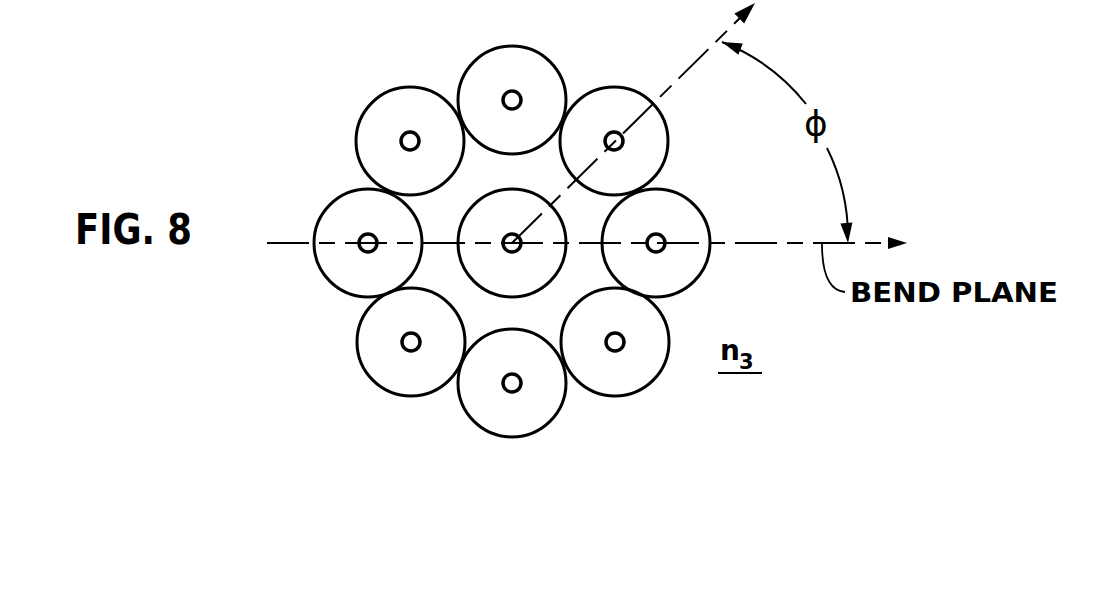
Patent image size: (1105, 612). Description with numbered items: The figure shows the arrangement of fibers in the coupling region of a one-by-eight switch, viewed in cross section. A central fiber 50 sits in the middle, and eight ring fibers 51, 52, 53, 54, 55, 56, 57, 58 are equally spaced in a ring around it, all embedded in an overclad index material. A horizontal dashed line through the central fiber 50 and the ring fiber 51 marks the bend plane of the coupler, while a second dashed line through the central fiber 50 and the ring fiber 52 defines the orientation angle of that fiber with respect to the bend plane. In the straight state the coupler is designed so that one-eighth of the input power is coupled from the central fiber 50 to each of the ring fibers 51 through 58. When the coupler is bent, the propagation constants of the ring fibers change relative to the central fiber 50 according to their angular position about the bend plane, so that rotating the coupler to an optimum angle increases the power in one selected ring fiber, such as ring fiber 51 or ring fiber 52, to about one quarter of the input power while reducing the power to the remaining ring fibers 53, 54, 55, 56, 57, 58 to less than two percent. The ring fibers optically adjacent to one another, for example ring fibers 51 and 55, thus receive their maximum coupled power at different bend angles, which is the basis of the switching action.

The central fiber 50 is at (505, 296).
The ring fiber 51 is at (698, 278).
The ring fiber 52 is at (622, 88).
The ring fiber 53 is at (483, 54).
The ring fiber 54 is at (352, 137).
The ring fiber 55 is at (331, 285).
The ring fiber 56 is at (383, 391).
The ring fiber 57 is at (513, 438).
The ring fiber 58 is at (638, 391).